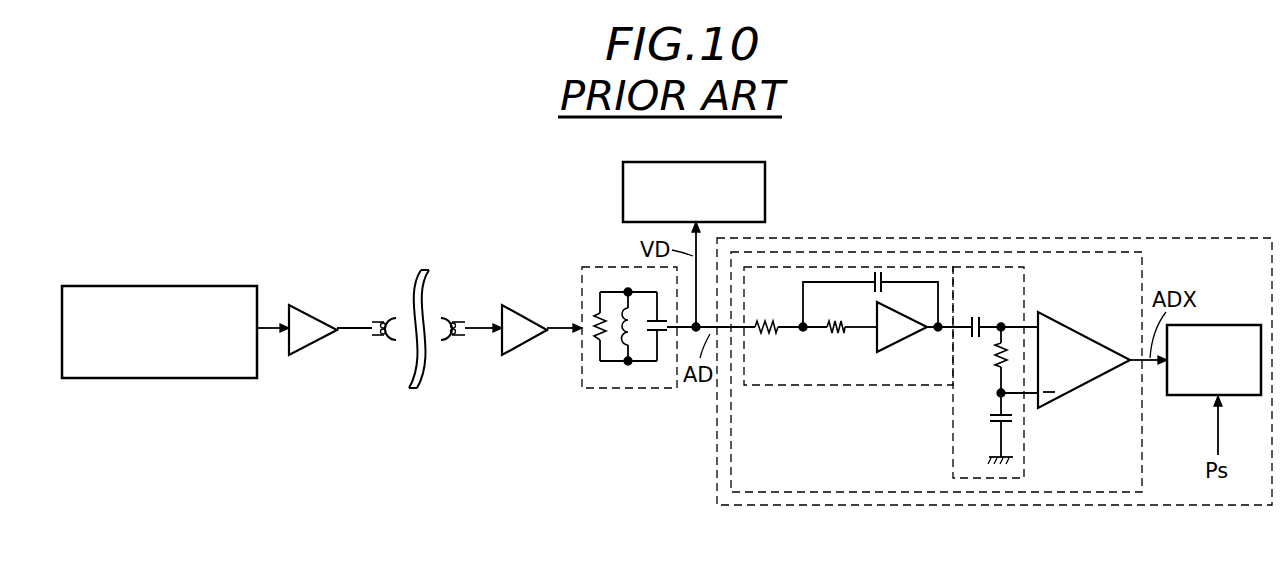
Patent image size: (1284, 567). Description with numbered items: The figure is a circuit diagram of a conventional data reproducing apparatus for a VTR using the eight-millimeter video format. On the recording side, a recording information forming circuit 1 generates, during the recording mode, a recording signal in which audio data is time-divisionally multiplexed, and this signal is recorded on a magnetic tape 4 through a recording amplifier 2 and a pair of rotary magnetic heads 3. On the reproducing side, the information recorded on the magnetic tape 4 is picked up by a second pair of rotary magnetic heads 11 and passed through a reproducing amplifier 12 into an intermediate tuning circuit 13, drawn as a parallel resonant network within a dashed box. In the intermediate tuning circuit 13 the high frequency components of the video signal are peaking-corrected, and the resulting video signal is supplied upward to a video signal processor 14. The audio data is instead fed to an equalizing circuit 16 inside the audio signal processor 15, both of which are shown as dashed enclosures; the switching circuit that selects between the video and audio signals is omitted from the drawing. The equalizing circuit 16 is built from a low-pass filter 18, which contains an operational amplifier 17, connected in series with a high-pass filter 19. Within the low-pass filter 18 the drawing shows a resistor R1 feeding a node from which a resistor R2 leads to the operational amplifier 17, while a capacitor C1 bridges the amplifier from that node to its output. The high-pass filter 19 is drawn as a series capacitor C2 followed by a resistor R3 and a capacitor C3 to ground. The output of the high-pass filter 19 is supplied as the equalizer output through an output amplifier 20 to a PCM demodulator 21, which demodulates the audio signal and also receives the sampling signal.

The recording information forming circuit 1 is at (165, 286).
The recording amplifier 2 is at (302, 312).
The rotary magnetic heads 3 is at (381, 318).
The magnetic tape 4 is at (426, 270).
The rotary magnetic heads 11 is at (447, 318).
The reproducing amplifier 12 is at (522, 345).
The intermediate tuning circuit 13 is at (580, 286).
The video signal processor 14 is at (768, 192).
The audio signal processor 15 is at (988, 238).
The equalizing circuit 16 is at (920, 253).
The operational amplifier 17 is at (900, 341).
The low-pass filter 18 is at (786, 388).
The high-pass filter 19 is at (953, 413).
The output amplifier 20 is at (1092, 381).
The PCM demodulator 21 is at (1188, 396).
The resistor R1 is at (769, 338).
The resistor R2 is at (832, 338).
The resistor R3 is at (998, 360).
The capacitor C1 is at (874, 288).
The capacitor C2 is at (984, 319).
The capacitor C3 is at (999, 421).